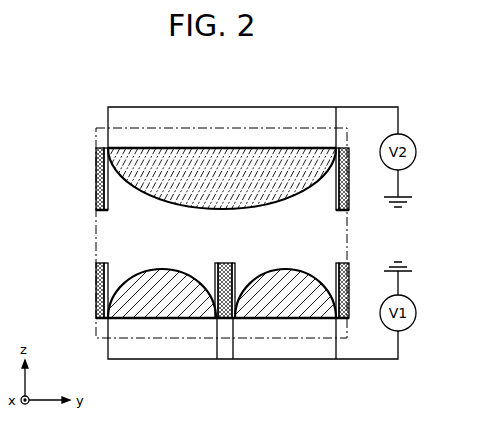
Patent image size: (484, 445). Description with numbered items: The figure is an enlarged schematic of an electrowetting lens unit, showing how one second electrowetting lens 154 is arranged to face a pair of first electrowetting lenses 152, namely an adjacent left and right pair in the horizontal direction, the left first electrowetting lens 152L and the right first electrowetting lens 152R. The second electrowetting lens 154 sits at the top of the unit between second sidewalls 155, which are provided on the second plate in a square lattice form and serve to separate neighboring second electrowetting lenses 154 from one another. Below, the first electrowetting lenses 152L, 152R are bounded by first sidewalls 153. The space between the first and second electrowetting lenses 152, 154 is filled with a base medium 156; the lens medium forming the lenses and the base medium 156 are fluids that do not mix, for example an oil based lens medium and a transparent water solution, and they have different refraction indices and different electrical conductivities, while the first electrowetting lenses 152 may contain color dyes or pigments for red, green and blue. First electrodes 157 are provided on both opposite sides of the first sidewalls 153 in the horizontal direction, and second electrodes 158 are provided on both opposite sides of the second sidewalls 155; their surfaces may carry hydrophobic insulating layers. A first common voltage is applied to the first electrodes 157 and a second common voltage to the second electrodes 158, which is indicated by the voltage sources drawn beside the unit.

The first electrowetting lenses 152 is at (316, 391).
The left first electrowetting lens 152L is at (160, 310).
The right first electrowetting lens 152R is at (284, 310).
The first sidewalls 153 is at (96, 290).
The second electrowetting lens 154 is at (293, 188).
The second sidewalls 155 is at (96, 177).
The base medium 156 is at (100, 239).
The first electrodes 157 is at (108, 272).
The second electrodes 158 is at (107, 193).